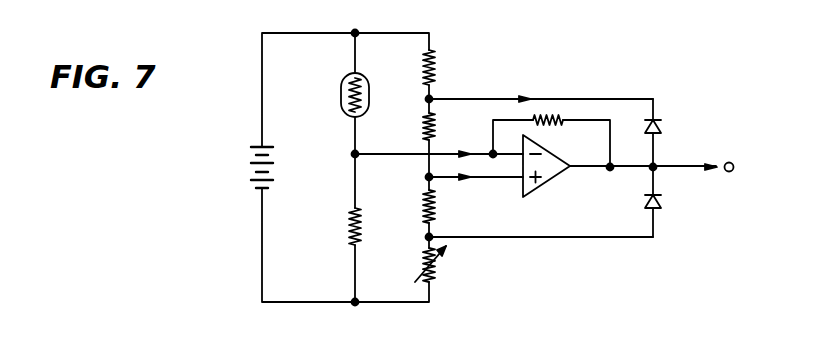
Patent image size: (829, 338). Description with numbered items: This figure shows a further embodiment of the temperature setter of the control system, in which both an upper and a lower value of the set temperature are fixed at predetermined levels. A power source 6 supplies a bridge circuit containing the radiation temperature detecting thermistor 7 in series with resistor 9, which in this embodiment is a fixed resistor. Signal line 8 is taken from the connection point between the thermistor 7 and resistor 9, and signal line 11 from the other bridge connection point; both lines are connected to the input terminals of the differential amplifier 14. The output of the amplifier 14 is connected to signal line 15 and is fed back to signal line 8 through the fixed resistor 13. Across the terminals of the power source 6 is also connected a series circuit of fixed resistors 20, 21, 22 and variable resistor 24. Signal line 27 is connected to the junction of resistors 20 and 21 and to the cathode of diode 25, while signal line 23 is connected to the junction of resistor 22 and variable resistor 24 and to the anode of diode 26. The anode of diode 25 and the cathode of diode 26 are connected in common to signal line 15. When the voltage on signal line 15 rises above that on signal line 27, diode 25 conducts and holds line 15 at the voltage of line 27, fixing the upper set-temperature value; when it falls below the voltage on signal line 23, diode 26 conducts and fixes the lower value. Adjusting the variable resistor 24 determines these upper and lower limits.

The power source 6 is at (251, 163).
The radiation temperature detecting thermistor 7 is at (341, 93).
The signal line 8 is at (452, 153).
The resistor 9 is at (349, 233).
The signal line 11 is at (455, 180).
The fixed resistor 13 is at (560, 118).
The differential amplifier 14 is at (546, 182).
The signal line 15 is at (688, 170).
The fixed resistor 20 is at (435, 63).
The fixed resistor 21 is at (427, 113).
The fixed resistor 22 is at (424, 211).
The signal line 23 is at (527, 238).
The variable resistor 24 is at (440, 275).
The diode 25 is at (657, 120).
The diode 26 is at (660, 208).
The signal line 27 is at (497, 99).